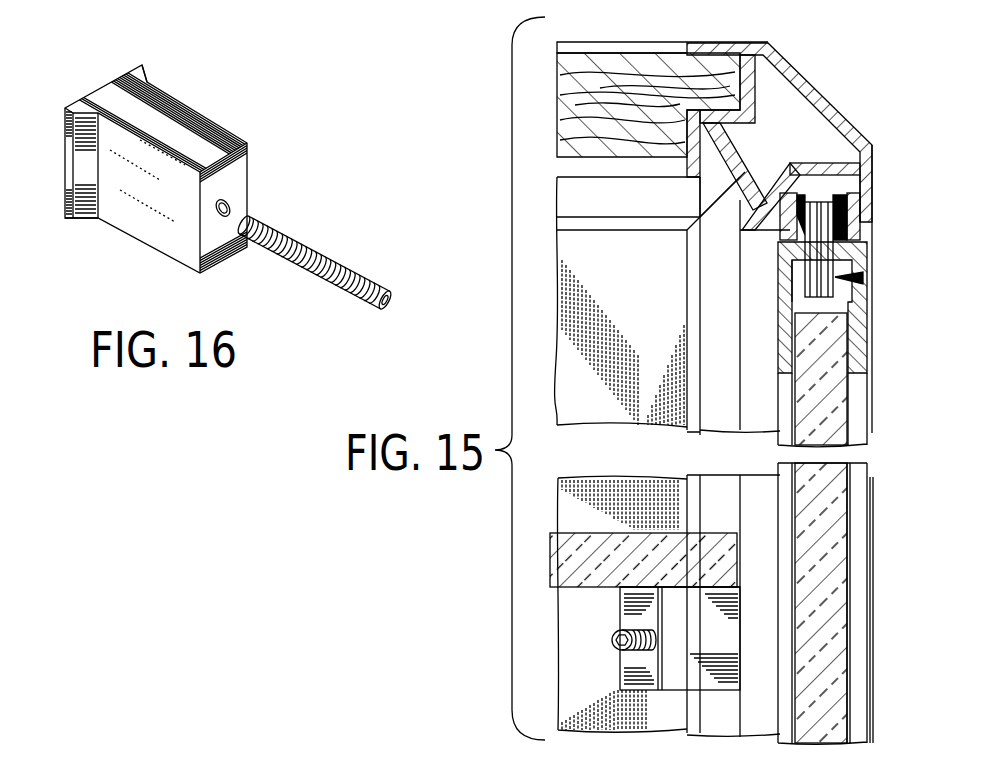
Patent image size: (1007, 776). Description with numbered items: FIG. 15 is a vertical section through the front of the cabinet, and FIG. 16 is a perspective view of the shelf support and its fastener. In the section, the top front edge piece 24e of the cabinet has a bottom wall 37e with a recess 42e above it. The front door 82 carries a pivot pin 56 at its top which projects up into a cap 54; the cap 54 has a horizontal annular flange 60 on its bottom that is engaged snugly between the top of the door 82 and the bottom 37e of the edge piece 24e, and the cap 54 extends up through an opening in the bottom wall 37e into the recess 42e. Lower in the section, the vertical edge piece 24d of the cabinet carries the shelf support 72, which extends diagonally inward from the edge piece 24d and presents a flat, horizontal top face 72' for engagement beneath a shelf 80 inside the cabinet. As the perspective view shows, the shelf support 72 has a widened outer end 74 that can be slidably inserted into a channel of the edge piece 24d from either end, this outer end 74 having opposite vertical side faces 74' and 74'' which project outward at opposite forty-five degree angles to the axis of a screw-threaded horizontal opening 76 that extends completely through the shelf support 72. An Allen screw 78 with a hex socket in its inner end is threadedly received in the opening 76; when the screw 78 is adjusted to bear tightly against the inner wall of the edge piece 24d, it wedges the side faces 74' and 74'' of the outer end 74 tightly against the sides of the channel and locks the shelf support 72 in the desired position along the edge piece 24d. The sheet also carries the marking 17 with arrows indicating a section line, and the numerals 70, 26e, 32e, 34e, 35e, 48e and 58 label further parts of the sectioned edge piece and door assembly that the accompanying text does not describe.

In FIG. 15, the wood header / sash frame member 70 is at (638, 47).
In FIG. 15, the top front edge piece 24e is at (797, 72).
In FIG. 15, the outer wall of frame profile 26e is at (874, 167).
In FIG. 15, the transverse web of frame profile 32e is at (818, 163).
In FIG. 15, the inclined leg of frame profile 34e is at (775, 178).
In FIG. 15, the inclined surface of frame member 35e is at (733, 184).
In FIG. 15, the bottom wall 37e is at (748, 231).
In FIG. 15, the recess 42e is at (852, 184).
In FIG. 15, the recess between frame members 48e is at (712, 171).
In FIG. 15, the cap 54 is at (850, 228).
In FIG. 15, the pivot pin 56 is at (864, 280).
In FIG. 15, the glazing bead housing 58 is at (808, 288).
In FIG. 15, the horizontal annular flange 60 is at (778, 242).
In FIG. 15, the vertical edge piece 24d is at (715, 307).
In FIG. 15, the front door 82 is at (860, 444).
In FIG. 15, the shelf 80 is at (550, 552).
In FIG. 16, the shelf support 72 is at (158, 169).
In FIG. 15, the shelf support 72 is at (680, 638).
In FIG. 16, the top face 72' is at (179, 114).
In FIG. 15, the top face 72' is at (680, 542).
In FIG. 16, the widened outer end 74 is at (89, 133).
In FIG. 16, the vertical side face 74' is at (102, 240).
In FIG. 16, the vertical side face 74'' is at (175, 63).
In FIG. 16, the screw-threaded horizontal opening 76 is at (231, 197).
In FIG. 16, the Allen screw 78 is at (327, 252).
In FIG. 15, the Allen screw 78 is at (617, 648).
In FIG. 15, the section line 17- 17 is at (563, 636).